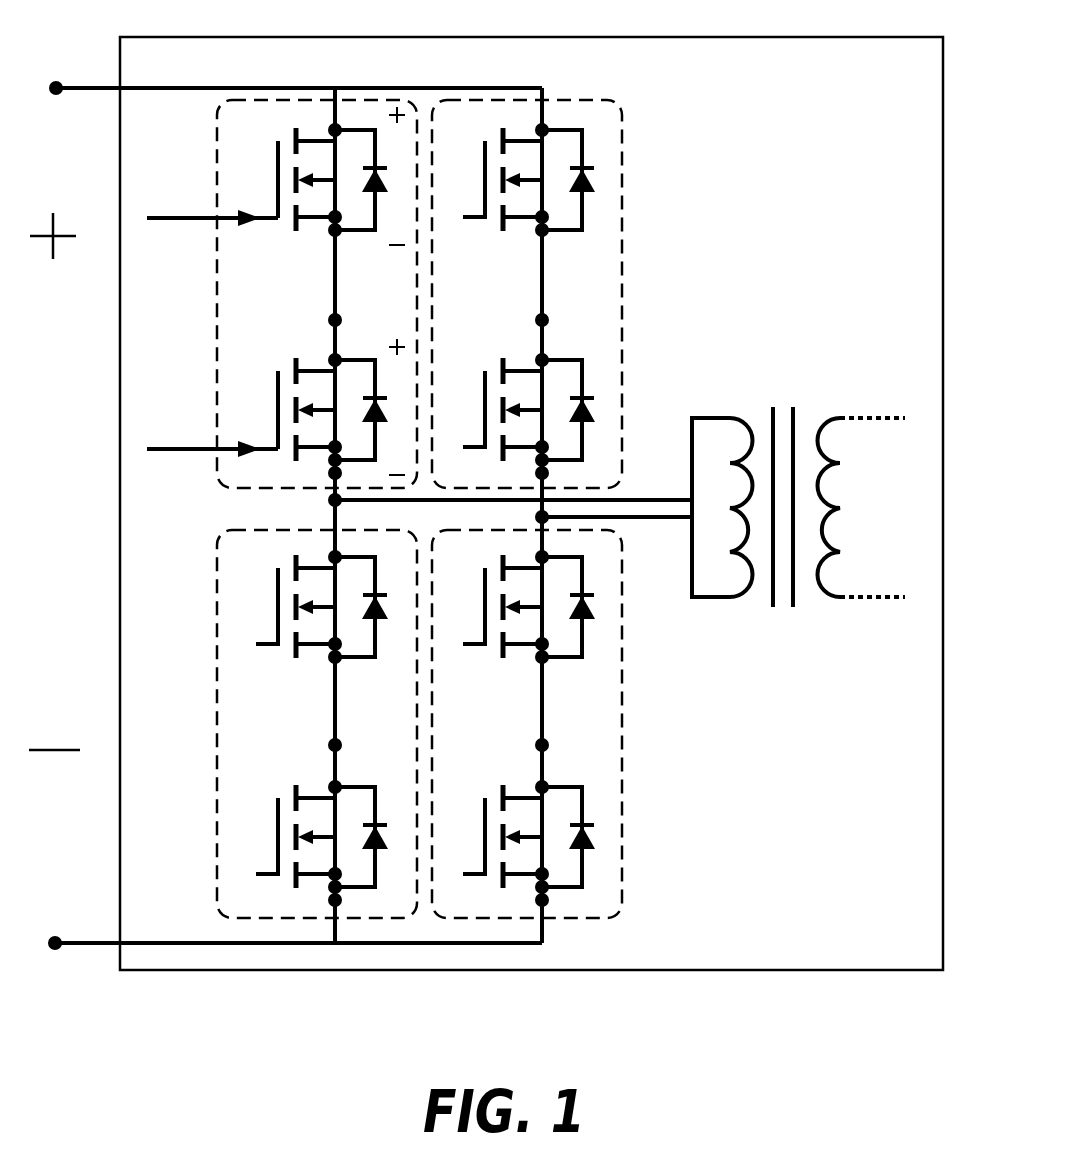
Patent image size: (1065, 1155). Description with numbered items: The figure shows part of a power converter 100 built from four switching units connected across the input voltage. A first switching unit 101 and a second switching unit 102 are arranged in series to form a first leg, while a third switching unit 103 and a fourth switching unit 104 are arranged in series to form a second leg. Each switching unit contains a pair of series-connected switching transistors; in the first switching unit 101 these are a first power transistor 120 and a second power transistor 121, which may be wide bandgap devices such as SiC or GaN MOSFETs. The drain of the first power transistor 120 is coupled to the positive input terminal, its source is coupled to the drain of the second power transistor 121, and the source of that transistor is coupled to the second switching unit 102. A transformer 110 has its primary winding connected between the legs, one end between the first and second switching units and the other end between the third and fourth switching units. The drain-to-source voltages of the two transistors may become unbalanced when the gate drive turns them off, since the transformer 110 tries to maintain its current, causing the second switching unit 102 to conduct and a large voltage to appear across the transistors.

The power converter 100 is at (130, 72).
The first switching unit 101 is at (217, 287).
The second switching unit 102 is at (217, 703).
The third switching unit 103 is at (622, 290).
The fourth switching unit 104 is at (622, 703).
The transformer 110 is at (734, 384).
The first power transistor 120 is at (293, 228).
The second power transistor 121 is at (295, 363).